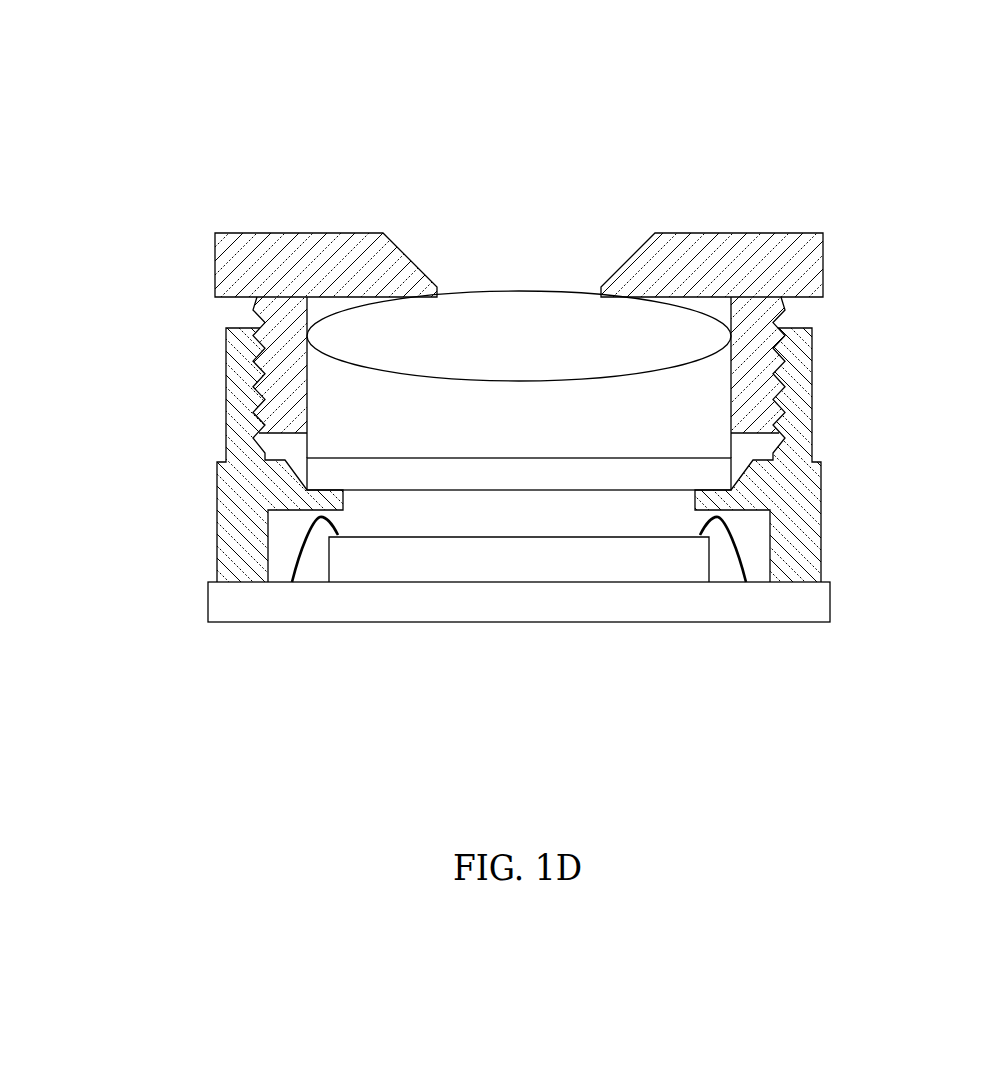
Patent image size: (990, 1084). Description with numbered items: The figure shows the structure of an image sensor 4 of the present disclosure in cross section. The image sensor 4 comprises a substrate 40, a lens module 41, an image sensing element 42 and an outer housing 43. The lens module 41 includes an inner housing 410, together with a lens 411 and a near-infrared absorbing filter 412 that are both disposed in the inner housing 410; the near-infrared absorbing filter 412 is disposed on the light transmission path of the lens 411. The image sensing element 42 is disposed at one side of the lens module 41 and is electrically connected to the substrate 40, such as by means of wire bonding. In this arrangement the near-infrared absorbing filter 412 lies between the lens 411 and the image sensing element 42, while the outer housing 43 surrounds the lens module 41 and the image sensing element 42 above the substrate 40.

The image sensor 4 is at (818, 193).
The substrate 40 is at (795, 603).
The lens module 41 is at (907, 242).
The inner housing 410 is at (797, 263).
The lens 411 is at (678, 330).
The near-infrared absorbing filter 412 is at (702, 477).
The image sensing element 42 is at (518, 562).
The outer housing 43 is at (242, 423).